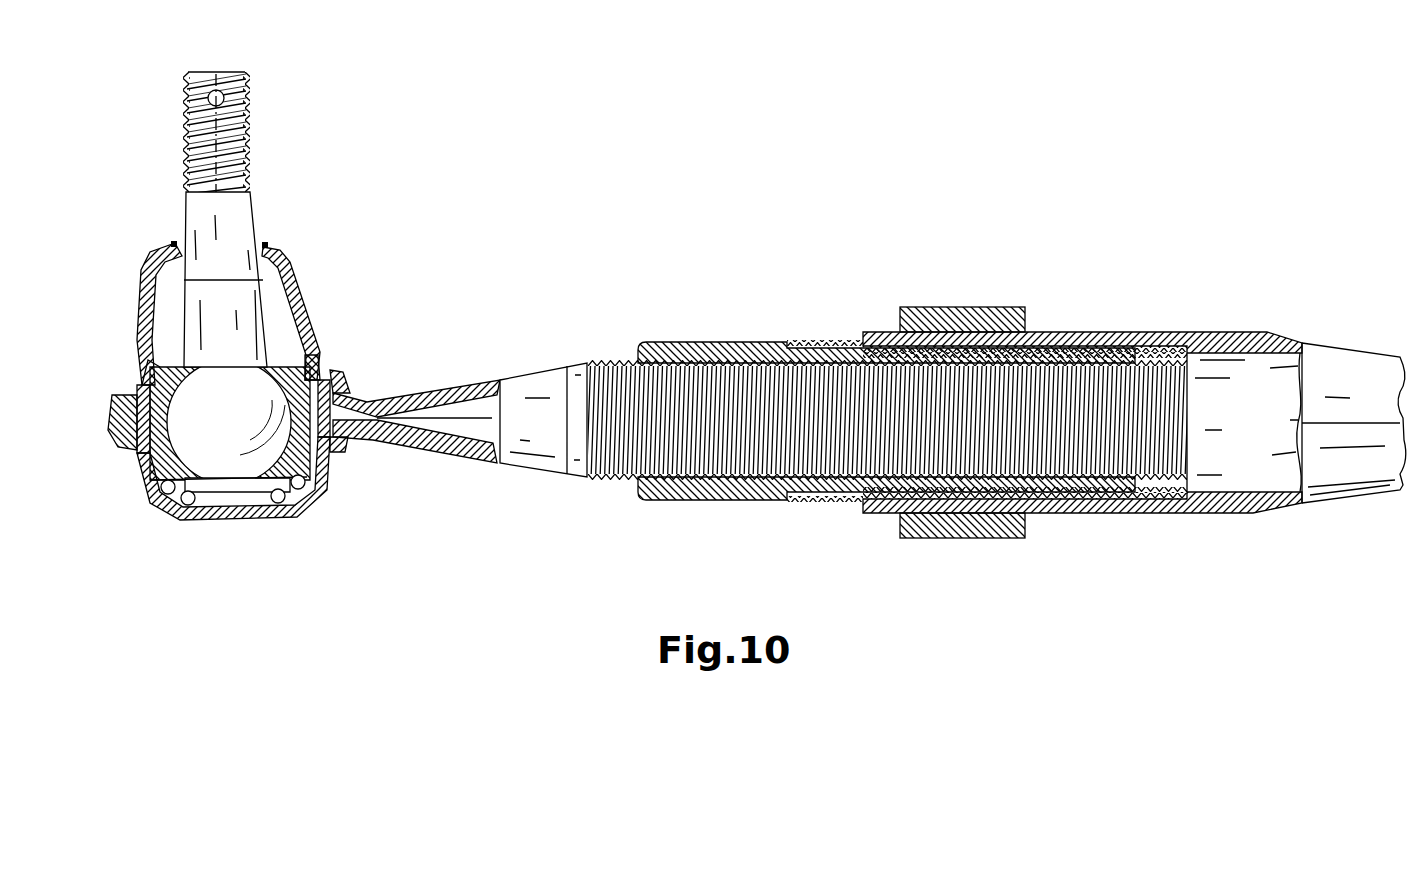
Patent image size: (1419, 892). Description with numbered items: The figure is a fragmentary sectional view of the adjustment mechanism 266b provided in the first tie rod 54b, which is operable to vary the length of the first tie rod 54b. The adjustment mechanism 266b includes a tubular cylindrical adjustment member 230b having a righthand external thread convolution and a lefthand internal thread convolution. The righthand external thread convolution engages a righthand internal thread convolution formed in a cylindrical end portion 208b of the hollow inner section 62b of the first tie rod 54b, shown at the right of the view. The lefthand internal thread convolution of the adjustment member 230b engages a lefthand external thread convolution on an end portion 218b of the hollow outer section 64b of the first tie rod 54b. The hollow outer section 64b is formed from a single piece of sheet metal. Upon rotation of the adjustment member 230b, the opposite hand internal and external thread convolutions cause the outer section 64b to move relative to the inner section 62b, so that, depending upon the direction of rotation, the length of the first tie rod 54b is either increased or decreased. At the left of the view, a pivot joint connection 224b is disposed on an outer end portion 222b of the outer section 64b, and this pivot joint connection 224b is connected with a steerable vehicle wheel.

The pivot joint connection 224b is at (314, 281).
The outer end portion 222b is at (258, 512).
The hollow outer section 64b is at (541, 383).
The end portion 218b is at (637, 448).
The adjustment member 230b is at (722, 348).
The first tie rod 54b is at (1097, 306).
The cylindrical end portion 208b is at (1218, 505).
The adjustment mechanism 266b is at (854, 286).
The hollow inner section 62b is at (1276, 328).